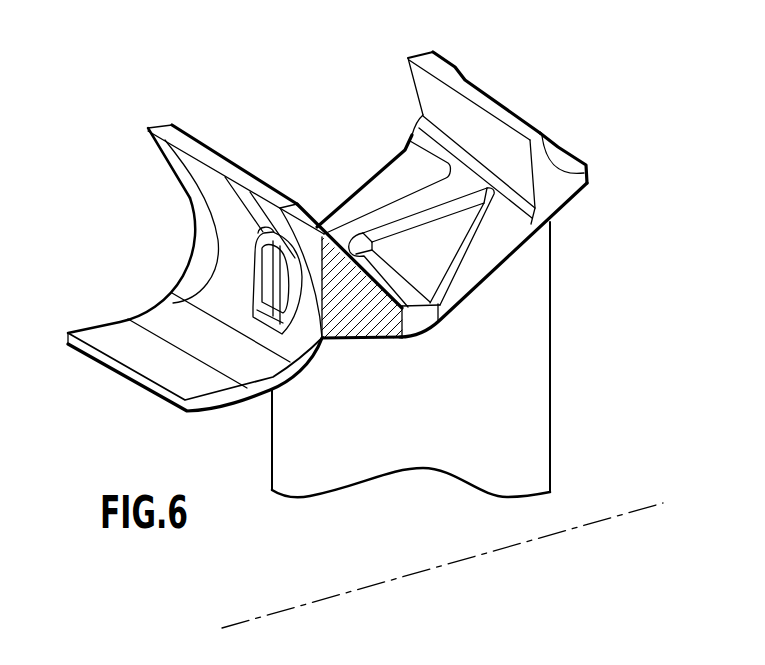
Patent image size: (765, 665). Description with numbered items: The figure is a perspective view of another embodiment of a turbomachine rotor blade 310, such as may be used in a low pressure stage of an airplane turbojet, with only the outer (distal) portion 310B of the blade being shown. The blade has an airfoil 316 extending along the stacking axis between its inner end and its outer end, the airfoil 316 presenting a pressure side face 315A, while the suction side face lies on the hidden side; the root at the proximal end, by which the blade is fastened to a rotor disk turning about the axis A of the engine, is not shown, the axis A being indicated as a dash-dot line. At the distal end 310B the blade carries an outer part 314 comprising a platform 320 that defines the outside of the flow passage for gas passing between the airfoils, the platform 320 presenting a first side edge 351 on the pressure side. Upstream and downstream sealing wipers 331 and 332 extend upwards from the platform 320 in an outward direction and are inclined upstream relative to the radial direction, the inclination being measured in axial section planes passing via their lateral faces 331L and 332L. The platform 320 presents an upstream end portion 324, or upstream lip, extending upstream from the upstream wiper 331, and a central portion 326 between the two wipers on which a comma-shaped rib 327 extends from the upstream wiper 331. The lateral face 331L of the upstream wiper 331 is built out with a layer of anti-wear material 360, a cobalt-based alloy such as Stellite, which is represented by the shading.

The turbomachine rotor blade 310 is at (556, 291).
The outer (distal) portion 310B is at (277, 280).
The outer part 314 is at (144, 231).
The pressure side face 315A is at (402, 450).
The airfoil 316 is at (535, 428).
The platform 320 is at (456, 316).
The upstream end portion 324 is at (158, 371).
The central portion 326 is at (478, 233).
The comma-shaped rib 327 is at (377, 210).
The upstream sealing wiper 331 is at (205, 170).
The lateral face of upstream wiper 331L is at (146, 122).
The downstream sealing wiper 332 is at (494, 106).
The lateral face of downstream wiper 332L is at (403, 69).
The first side edge 351 is at (494, 264).
The layer of anti-wear material 360 is at (357, 308).
The axis of the engine A is at (648, 507).